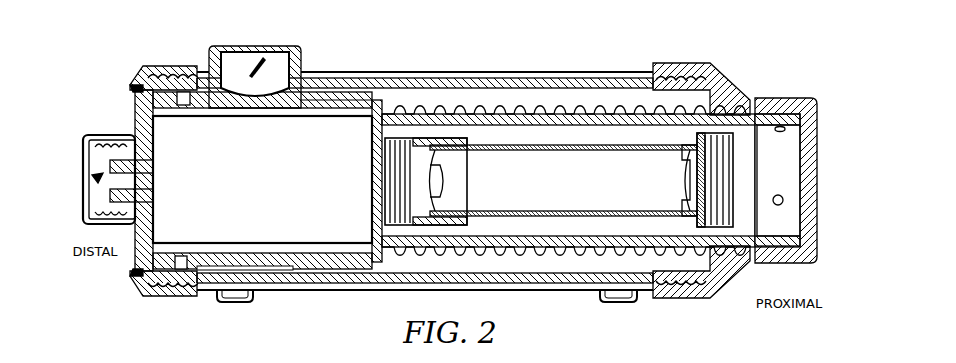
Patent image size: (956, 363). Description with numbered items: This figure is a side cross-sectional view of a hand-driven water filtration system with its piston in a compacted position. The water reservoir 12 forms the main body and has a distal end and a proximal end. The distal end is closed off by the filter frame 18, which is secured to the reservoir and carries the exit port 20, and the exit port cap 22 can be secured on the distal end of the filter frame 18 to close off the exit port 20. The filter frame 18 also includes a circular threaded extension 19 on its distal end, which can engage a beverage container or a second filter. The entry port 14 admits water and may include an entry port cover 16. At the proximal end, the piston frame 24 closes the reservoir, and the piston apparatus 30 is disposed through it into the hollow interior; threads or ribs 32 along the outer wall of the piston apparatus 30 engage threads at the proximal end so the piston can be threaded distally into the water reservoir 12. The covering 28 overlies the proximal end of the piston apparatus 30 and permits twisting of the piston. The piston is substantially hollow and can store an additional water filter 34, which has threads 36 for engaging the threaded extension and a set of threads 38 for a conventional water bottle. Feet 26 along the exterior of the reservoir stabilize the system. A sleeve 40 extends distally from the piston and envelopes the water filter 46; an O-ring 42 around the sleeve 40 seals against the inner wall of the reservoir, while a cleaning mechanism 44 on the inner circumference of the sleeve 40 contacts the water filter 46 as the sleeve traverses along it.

The water reservoir 12 is at (425, 72).
The entry port 14 is at (258, 50).
The entry port cover 16 is at (208, 57).
The filter frame 18 is at (157, 64).
The circular threaded extension 19 is at (153, 200).
The exit port 20 is at (83, 180).
The exit port cap 22 is at (90, 133).
The piston frame 24 is at (696, 298).
The feet 26 is at (622, 303).
The covering 28 is at (780, 97).
The piston apparatus 30 is at (540, 260).
The threads or ribs 32 is at (583, 104).
The additional water filter 34 is at (537, 165).
The threads 36 is at (720, 158).
The set of threads 38 is at (397, 160).
The sleeve 40 is at (343, 103).
The O-ring 42 is at (315, 100).
The cleaning mechanism 44 is at (133, 86).
The water filter 46 is at (311, 193).